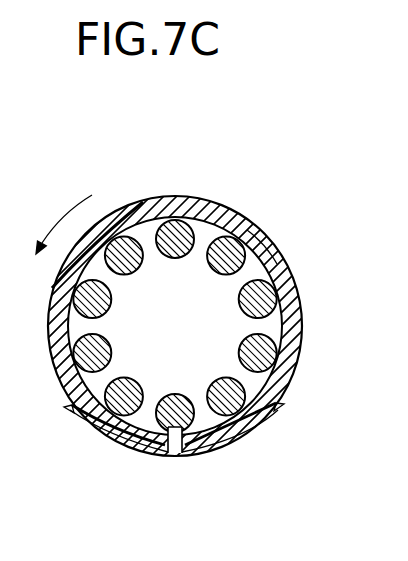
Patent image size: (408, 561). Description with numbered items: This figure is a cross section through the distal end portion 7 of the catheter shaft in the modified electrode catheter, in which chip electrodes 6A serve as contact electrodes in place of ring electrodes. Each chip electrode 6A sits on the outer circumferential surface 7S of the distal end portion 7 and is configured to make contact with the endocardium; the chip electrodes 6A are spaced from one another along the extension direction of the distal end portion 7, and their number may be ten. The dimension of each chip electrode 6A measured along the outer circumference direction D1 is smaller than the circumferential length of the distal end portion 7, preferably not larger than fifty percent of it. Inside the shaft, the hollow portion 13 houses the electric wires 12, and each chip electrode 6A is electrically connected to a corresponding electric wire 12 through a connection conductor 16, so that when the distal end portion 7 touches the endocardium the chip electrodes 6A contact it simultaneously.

The distal end portion 7 is at (293, 295).
The outer circumferential surface 7S is at (263, 237).
The hollow portion 13 is at (158, 285).
The electric wire 12 is at (134, 428).
The connection conductor 16 is at (188, 437).
The chip electrode 6A is at (232, 440).
The outer circumference direction D1 is at (57, 224).